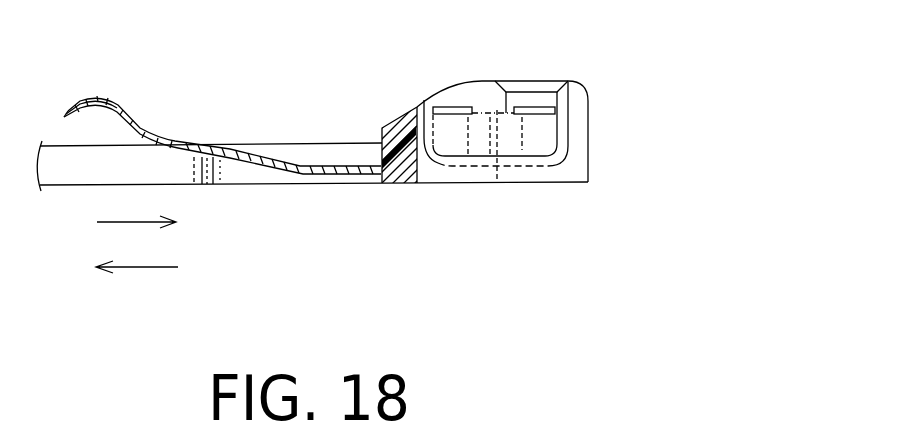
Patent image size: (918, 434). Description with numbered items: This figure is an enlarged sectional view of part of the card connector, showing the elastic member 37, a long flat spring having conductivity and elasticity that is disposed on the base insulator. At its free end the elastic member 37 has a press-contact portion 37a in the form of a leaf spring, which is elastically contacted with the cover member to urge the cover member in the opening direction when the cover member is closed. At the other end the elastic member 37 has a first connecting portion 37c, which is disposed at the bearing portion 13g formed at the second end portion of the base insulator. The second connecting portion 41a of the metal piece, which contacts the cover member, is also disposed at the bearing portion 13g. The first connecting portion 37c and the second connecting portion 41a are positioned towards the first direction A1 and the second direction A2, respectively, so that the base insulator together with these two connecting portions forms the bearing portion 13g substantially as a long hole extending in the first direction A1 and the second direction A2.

The elastic member 37 is at (331, 175).
The press-contact portion 37a is at (128, 110).
The first connecting portion 37c is at (448, 104).
The second connecting portion 41a is at (534, 104).
The bearing portion 13g is at (452, 143).
The second direction A2 is at (128, 222).
The first direction A1 is at (140, 267).